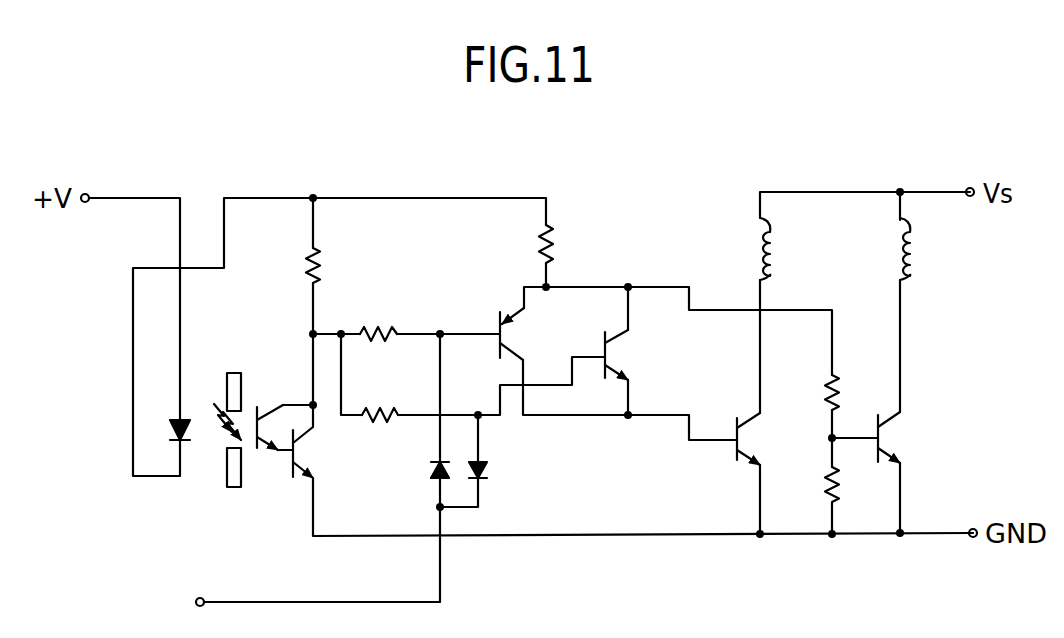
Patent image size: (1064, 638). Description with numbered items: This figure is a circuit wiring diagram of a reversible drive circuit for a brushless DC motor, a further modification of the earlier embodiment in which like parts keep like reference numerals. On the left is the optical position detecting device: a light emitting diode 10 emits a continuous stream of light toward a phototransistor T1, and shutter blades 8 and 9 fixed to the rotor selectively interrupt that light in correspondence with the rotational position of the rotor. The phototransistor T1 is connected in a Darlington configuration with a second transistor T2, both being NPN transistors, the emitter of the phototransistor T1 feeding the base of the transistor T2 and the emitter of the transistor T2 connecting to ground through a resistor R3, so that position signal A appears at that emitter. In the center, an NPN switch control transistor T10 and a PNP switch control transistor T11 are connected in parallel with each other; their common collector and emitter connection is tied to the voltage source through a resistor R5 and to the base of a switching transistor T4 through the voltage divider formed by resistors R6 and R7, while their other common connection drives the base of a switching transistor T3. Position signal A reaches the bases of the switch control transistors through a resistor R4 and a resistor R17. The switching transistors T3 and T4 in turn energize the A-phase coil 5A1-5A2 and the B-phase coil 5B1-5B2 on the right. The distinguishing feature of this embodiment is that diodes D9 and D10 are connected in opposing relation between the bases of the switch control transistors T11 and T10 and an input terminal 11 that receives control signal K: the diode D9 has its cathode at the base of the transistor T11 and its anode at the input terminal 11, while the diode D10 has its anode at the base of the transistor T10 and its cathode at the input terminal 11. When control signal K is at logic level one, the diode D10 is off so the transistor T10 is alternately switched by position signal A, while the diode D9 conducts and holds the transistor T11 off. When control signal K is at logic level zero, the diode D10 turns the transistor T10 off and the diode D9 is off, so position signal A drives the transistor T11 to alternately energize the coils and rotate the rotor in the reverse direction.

The shutter blade 8 is at (230, 373).
The shutter blade 9 is at (233, 487).
The light emitting diode 10 is at (172, 434).
The input terminal 11 is at (192, 601).
The control signal K is at (314, 598).
The phototransistor T1 is at (268, 410).
The second transistor T2 is at (300, 452).
The switching transistor T3 is at (745, 438).
The switching transistor T4 is at (885, 442).
The NPN switch control transistor T10 is at (612, 352).
The PNP switch control transistor T11 is at (506, 331).
The resistor R3 is at (319, 263).
The resistor R4 is at (379, 324).
The resistor R5 is at (553, 238).
The resistor R6 is at (826, 385).
The resistor R7 is at (829, 474).
The resistor R17 is at (378, 412).
The diode D9 is at (430, 468).
The diode D10 is at (488, 476).
The A-phase coil 5A1-5A2 is at (768, 242).
The B-phase coil 5B1-5B2 is at (908, 246).